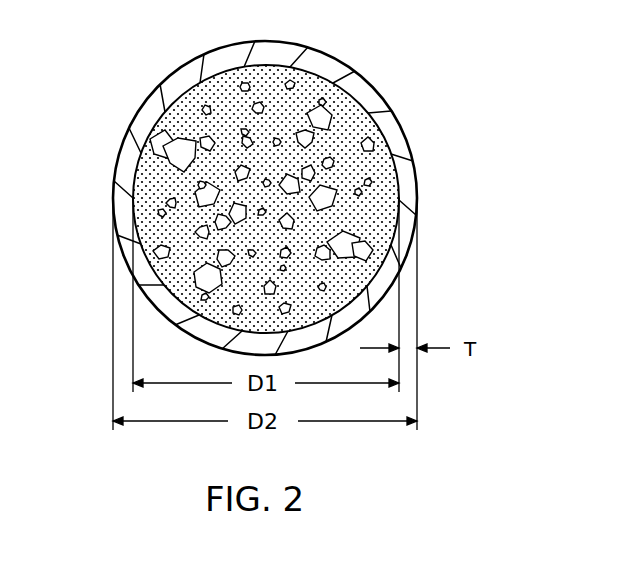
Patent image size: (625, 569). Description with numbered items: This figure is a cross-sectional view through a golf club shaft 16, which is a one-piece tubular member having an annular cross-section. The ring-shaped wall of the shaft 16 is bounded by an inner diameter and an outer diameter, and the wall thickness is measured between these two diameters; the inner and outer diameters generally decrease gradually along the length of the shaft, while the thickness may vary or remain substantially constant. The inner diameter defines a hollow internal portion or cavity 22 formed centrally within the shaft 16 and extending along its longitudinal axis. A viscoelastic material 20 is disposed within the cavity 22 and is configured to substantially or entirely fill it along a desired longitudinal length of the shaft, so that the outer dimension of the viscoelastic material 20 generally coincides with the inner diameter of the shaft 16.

The shaft 16 is at (162, 98).
The viscoelastic material 20 is at (222, 167).
The cavity 22 is at (135, 165).